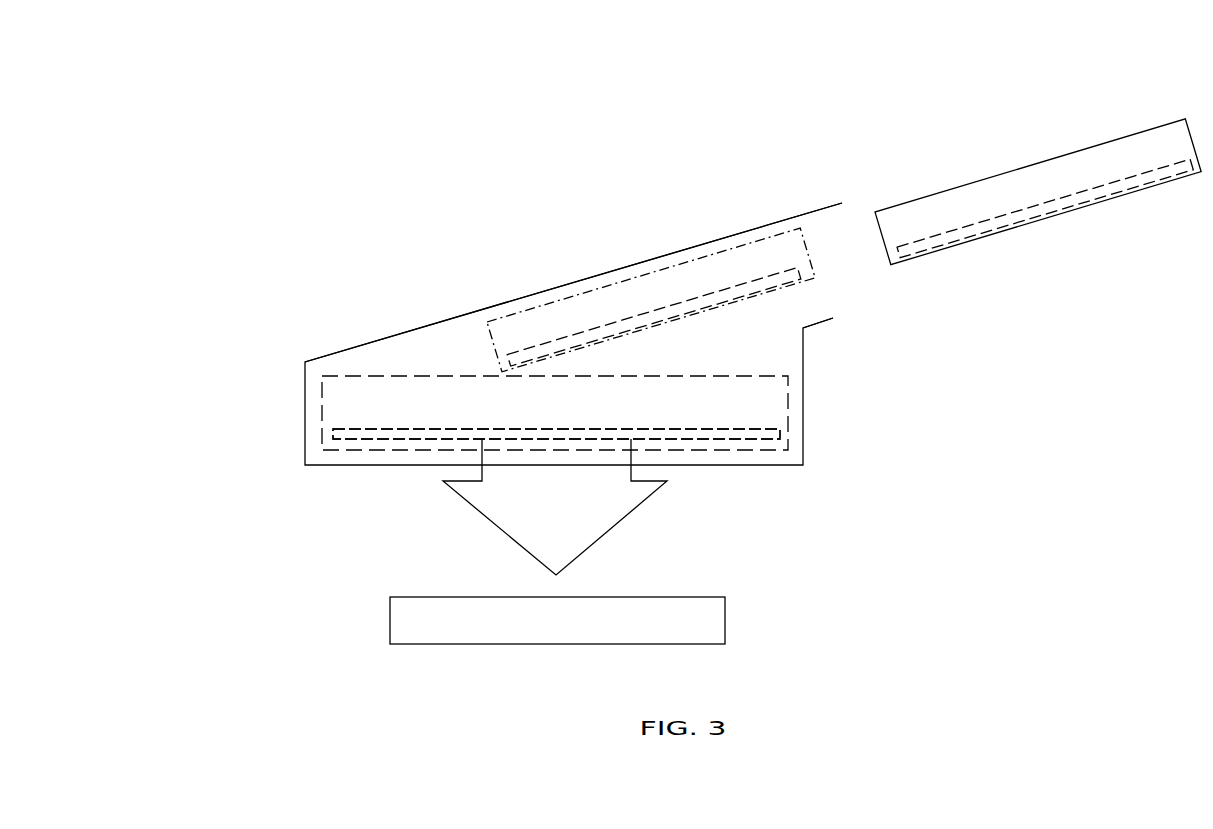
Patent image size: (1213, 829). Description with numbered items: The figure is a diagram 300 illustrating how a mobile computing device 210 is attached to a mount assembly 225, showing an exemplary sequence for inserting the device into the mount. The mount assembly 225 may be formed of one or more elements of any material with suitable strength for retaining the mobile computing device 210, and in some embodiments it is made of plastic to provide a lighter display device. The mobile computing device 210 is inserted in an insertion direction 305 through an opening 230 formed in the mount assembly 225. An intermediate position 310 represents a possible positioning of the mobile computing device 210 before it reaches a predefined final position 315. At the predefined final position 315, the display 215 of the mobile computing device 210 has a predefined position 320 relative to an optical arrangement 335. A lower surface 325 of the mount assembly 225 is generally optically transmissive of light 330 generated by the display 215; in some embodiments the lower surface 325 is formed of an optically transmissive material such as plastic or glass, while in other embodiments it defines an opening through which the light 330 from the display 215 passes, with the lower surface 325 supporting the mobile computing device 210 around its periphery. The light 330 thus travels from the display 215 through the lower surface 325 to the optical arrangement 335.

The diagram 300 is at (257, 98).
The insertion direction 305 is at (1003, 145).
The mobile computing device 210 is at (1113, 140).
The display 215 is at (668, 305).
The mount assembly 225 is at (335, 353).
The opening 230 is at (845, 218).
The intermediate position 310 is at (555, 300).
The predefined final position 315 is at (788, 382).
The predefined position 320 is at (786, 431).
The lower surface 325 is at (745, 465).
The light 330 is at (487, 518).
The optical arrangement 335 is at (713, 631).